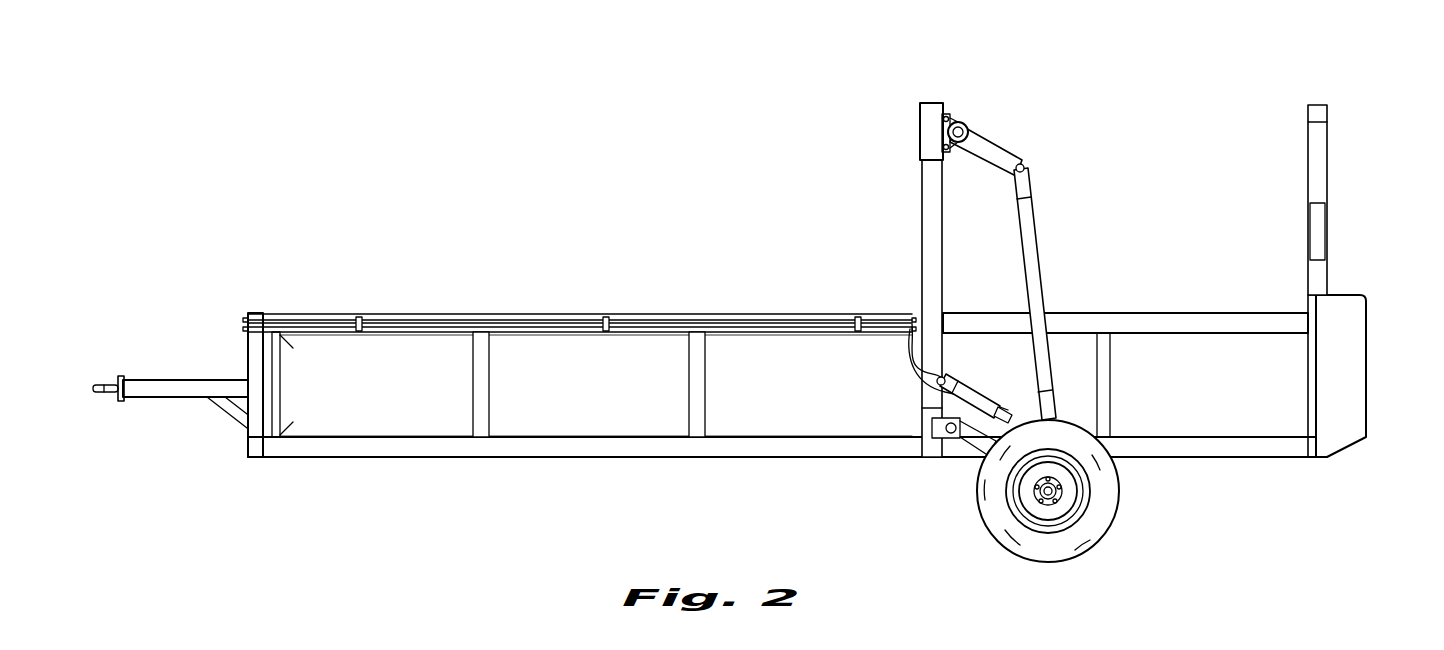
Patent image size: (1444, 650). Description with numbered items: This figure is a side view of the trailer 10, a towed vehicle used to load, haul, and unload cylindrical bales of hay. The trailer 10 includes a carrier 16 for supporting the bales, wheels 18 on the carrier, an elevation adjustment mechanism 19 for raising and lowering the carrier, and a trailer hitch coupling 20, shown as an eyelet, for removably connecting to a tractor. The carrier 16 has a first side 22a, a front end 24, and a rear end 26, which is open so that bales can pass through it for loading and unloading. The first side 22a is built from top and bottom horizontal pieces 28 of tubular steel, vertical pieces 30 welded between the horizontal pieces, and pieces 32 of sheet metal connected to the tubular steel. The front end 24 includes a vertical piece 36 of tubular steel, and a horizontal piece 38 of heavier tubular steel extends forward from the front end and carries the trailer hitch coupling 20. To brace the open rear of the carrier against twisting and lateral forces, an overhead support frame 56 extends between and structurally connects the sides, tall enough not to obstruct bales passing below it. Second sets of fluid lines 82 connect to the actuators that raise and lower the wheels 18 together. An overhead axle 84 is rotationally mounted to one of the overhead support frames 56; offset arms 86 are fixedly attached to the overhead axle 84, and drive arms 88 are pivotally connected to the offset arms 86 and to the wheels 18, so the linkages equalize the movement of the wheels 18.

The trailer 10 is at (349, 243).
The carrier 16 is at (534, 312).
The wheels 18 is at (1117, 535).
The elevation adjustment mechanism 19 is at (949, 470).
The trailer hitch coupling 20 is at (99, 379).
The first side 22a is at (541, 406).
The front end 24 is at (234, 426).
The rear end 26 is at (1371, 394).
The horizontal piece 28 is at (1195, 313).
The vertical pieces 30 is at (470, 388).
The pieces of sheet metal 32 is at (826, 397).
The vertical piece 36 is at (246, 354).
The horizontal piece 38 is at (128, 400).
The overhead support frame 56 is at (916, 97).
The second sets of fluid lines 82 is at (729, 322).
The overhead axle 84 is at (962, 124).
The offset arms 86 is at (996, 141).
The drive arms 88 is at (1045, 246).